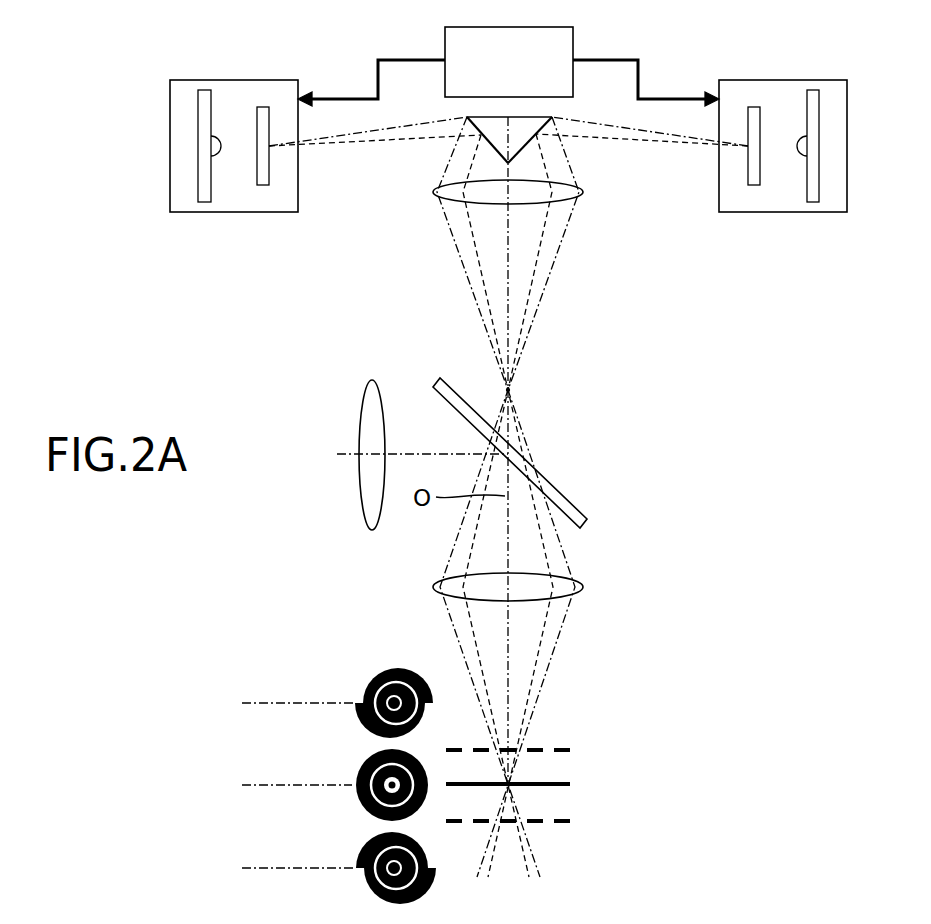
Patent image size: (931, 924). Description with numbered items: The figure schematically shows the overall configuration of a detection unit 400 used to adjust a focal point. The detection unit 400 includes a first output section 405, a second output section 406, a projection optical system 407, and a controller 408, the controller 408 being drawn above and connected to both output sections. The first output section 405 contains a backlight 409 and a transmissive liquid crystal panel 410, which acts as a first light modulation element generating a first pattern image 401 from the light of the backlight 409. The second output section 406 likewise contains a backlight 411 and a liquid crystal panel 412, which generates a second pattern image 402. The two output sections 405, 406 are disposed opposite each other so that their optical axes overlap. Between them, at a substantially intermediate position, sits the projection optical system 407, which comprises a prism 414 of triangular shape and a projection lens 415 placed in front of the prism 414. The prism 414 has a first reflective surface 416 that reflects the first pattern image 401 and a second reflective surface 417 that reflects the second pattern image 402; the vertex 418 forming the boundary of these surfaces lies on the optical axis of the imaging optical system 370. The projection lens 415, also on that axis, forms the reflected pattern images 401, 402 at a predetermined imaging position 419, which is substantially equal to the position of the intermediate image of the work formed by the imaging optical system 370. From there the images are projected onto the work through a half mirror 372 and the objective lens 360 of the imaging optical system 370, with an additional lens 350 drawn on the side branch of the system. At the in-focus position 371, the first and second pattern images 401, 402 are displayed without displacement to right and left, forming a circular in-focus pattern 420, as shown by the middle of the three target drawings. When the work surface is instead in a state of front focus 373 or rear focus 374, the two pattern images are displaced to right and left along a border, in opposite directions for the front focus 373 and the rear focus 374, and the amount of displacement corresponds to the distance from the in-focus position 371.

The detection unit 400 is at (595, 43).
The first output section 405 is at (238, 80).
The second output section 406 is at (780, 80).
The projection optical system 407 is at (598, 238).
The controller 408 is at (443, 43).
The backlight 409 is at (203, 202).
The transmissive liquid crystal panel 410 is at (262, 185).
The backlight 411 is at (812, 202).
The liquid crystal panel 412 is at (753, 185).
The prism 414 is at (505, 130).
The projection lens 415 is at (584, 190).
The first reflective surface 416 is at (490, 147).
The second reflective surface 417 is at (528, 148).
The vertex 418 is at (505, 168).
The imaging position 419 is at (512, 389).
The in-focus pattern 420 is at (350, 777).
The first pattern image 401 is at (366, 688).
The second pattern image 402 is at (364, 722).
The lens 350 is at (373, 380).
The objective lens 360 is at (584, 587).
The imaging optical system 370 is at (596, 599).
The in-focus position 371 is at (566, 783).
The half mirror 372 is at (572, 504).
The front focus 373 is at (566, 748).
The rear focus 374 is at (566, 819).